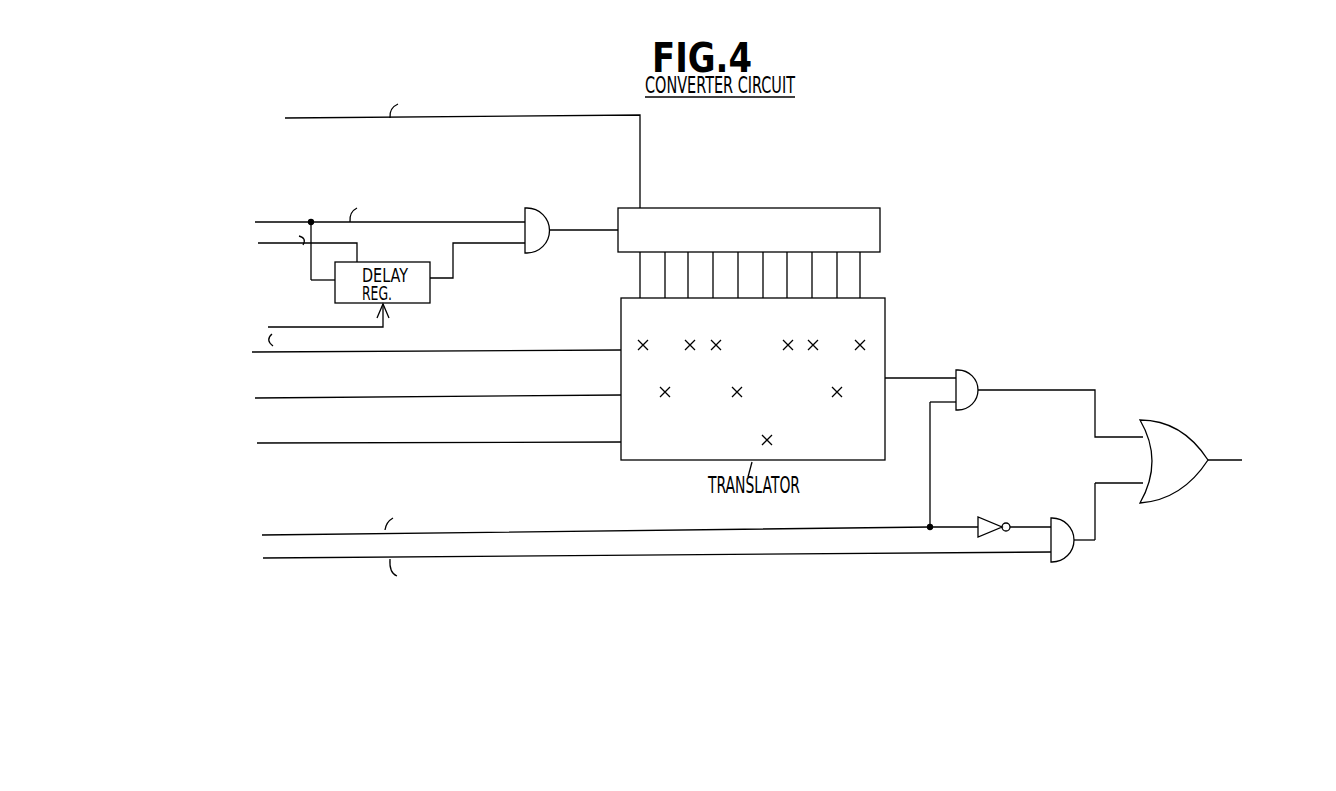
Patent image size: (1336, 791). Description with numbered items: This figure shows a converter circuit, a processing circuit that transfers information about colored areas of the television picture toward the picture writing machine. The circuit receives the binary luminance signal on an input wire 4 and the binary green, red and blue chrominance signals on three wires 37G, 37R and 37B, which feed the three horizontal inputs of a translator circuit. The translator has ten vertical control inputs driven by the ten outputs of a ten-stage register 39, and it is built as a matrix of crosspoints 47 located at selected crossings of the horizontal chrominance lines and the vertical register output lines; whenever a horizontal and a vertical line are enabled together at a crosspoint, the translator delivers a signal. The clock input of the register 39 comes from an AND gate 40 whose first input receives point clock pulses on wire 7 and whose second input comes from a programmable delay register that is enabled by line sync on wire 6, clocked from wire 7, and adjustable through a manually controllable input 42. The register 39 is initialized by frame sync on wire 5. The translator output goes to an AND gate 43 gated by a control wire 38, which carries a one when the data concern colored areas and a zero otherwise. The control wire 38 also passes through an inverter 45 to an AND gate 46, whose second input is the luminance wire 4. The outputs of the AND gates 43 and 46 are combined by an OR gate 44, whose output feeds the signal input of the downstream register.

The input wire 4 is at (300, 562).
The frame sync wire 5 is at (302, 118).
The line sync wire 6 is at (269, 247).
The point clock wire 7 is at (297, 218).
The green chrominance wire 37G is at (295, 355).
The red chrominance wire 37R is at (297, 402).
The blue chrominance wire 37B is at (305, 447).
The control wire 38 is at (307, 533).
The ten-stage register 39 is at (882, 231).
The AND gate 40 is at (546, 218).
The manually controllable input 42 is at (270, 328).
The AND gate 43 is at (977, 376).
The OR gate 44 is at (1163, 433).
The inverter 45 is at (999, 520).
The AND gate 46 is at (1069, 550).
The crosspoints 47 is at (744, 392).